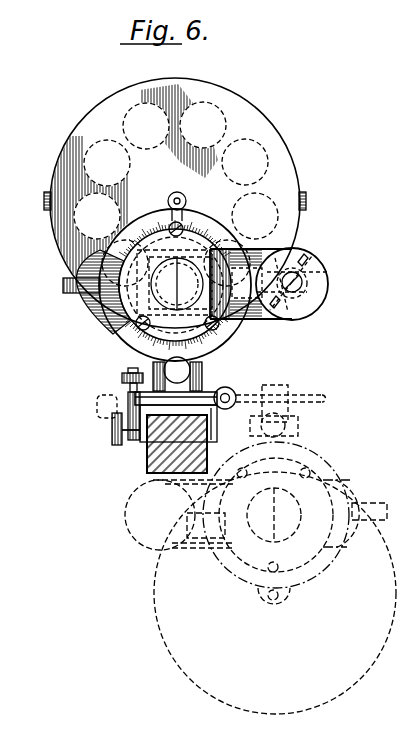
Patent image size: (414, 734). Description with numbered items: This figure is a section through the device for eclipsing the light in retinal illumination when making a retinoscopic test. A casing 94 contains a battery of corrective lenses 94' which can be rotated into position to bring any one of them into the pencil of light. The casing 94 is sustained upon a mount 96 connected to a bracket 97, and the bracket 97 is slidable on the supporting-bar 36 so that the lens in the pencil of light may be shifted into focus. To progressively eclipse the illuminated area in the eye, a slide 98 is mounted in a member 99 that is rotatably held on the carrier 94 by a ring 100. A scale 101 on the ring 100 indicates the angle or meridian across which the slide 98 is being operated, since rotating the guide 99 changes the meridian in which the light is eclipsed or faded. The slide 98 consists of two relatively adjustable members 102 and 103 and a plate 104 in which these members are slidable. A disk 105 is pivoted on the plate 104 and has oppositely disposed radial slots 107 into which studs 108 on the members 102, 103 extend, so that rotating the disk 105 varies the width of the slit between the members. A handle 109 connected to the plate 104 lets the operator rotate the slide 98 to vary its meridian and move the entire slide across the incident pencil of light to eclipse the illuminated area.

The casing 94 is at (175, 203).
The corrective lenses 94' is at (176, 194).
The ring 100 is at (171, 213).
The scale 101 is at (221, 237).
The adjustable member 103 is at (177, 284).
The adjustable member 102 is at (236, 284).
The handle 109 is at (63, 286).
The plate 104 is at (90, 305).
The member 99 is at (158, 332).
The mount 96 is at (202, 387).
The bracket 97 is at (216, 423).
The supporting-bar 36 is at (148, 472).
The studs 108 is at (298, 252).
The radial slots 107 is at (313, 260).
The disk 105 is at (318, 298).
The slide 98 is at (258, 319).